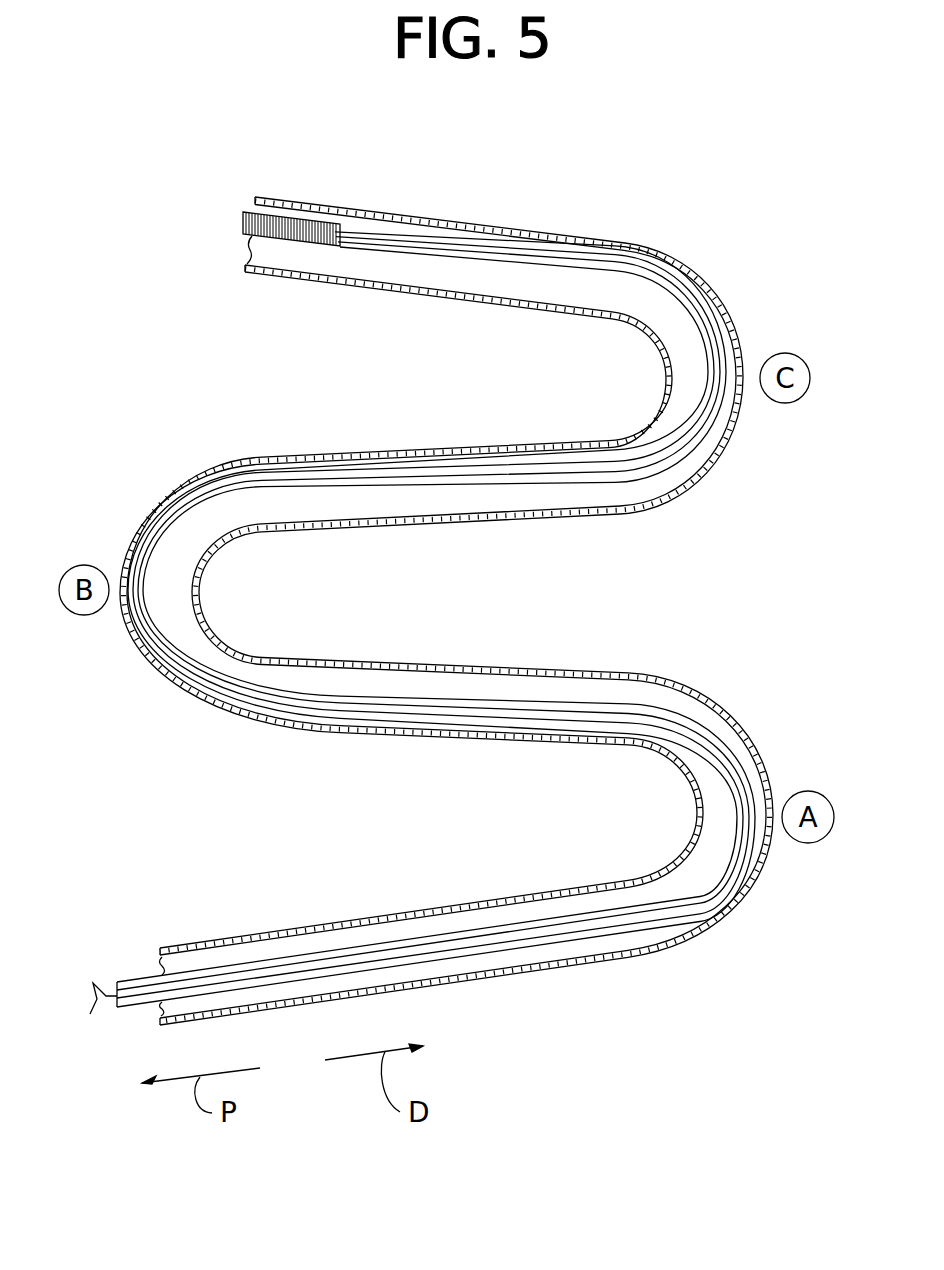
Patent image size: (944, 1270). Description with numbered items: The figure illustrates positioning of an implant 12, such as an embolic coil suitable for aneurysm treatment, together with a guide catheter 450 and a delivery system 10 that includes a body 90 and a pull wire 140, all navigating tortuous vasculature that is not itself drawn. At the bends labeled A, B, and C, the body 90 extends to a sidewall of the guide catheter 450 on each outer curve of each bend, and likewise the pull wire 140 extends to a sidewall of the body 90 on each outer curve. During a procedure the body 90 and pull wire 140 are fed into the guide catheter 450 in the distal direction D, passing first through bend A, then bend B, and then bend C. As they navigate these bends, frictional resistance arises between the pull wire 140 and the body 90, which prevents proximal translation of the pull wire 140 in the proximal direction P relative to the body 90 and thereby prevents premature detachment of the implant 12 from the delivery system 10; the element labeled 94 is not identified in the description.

The delivery system 10 is at (498, 726).
The implant 12 is at (318, 223).
The film layers 94 is at (334, 244).
The pull wire 140 is at (437, 478).
The guide catheter 450 is at (203, 943).
The body 90 is at (518, 950).